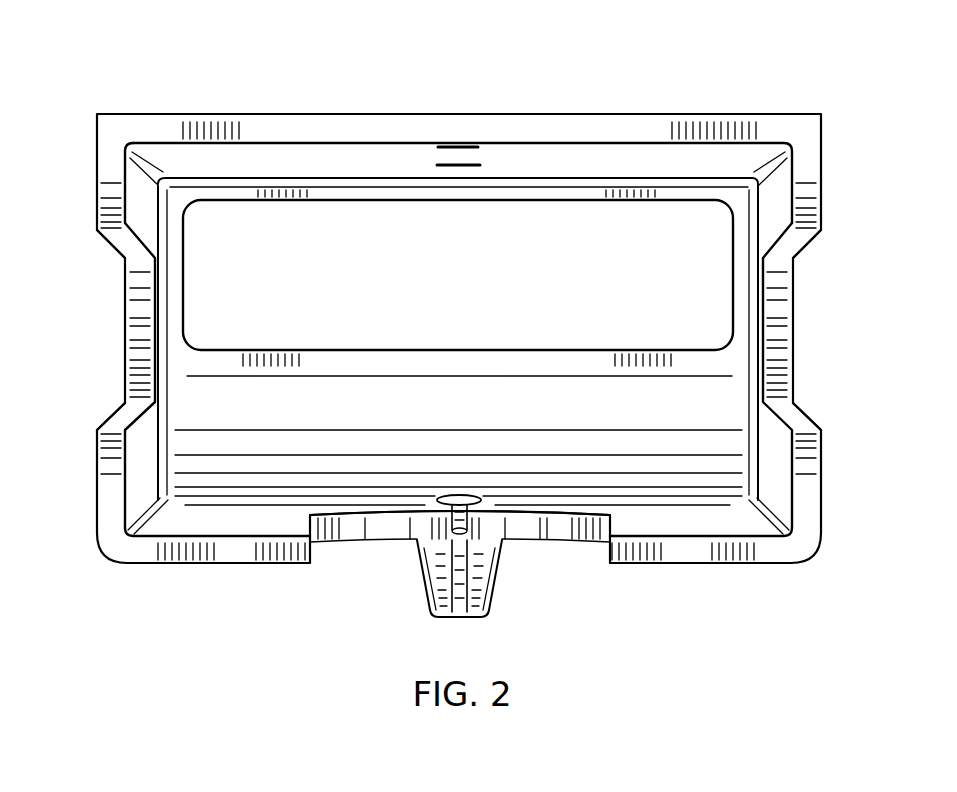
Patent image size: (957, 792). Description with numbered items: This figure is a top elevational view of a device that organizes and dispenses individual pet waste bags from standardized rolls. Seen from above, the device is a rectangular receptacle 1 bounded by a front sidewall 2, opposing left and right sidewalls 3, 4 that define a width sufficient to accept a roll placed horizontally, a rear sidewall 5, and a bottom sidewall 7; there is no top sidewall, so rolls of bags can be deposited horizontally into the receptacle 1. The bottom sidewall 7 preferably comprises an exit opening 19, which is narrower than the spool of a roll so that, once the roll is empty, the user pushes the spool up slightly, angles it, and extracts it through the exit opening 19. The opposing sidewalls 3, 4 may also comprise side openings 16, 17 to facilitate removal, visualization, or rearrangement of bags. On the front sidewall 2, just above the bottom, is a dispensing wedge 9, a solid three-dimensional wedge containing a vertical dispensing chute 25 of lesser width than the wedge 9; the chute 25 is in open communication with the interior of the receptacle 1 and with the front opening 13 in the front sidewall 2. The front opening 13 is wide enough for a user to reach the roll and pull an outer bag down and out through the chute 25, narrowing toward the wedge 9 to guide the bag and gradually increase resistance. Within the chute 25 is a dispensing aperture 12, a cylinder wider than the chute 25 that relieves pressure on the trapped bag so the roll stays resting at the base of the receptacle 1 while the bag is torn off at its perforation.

The rectangular receptacle 1 is at (779, 63).
The front sidewall 2 is at (225, 521).
The left sidewall 3 is at (140, 492).
The right sidewall 4 is at (780, 492).
The rear sidewall 5 is at (610, 163).
The bottom sidewall 7 is at (695, 365).
The dispensing wedge 9 is at (490, 580).
The dispensing aperture 12 is at (455, 497).
The front opening 13 is at (360, 564).
The side opening 16 is at (823, 328).
The side opening 17 is at (95, 328).
The exit opening 19 is at (408, 224).
The dispensing chute 25 is at (459, 612).